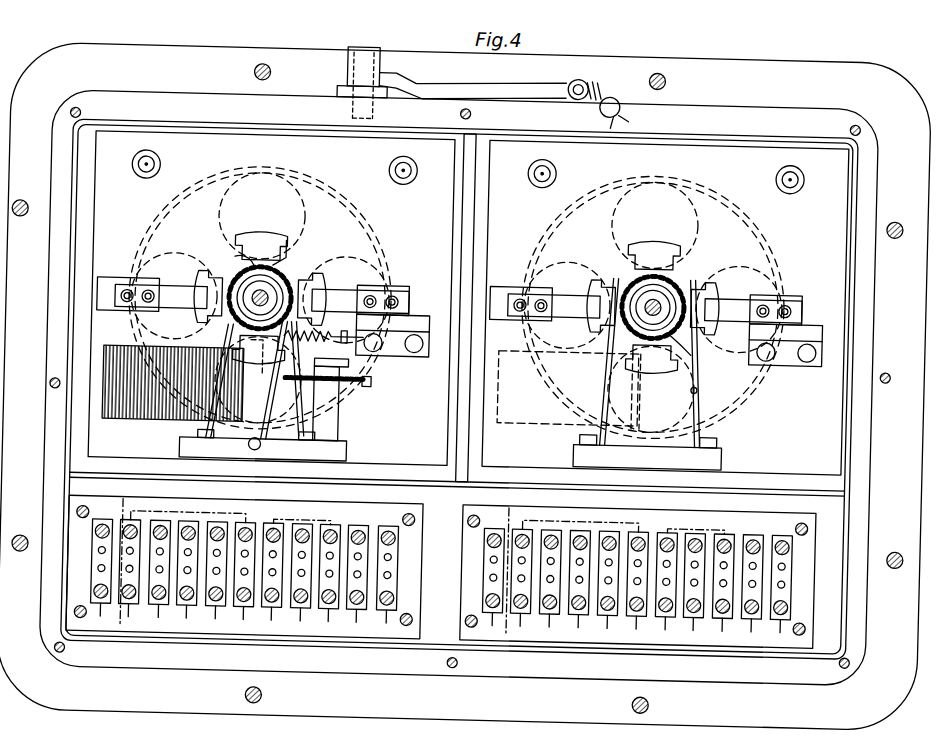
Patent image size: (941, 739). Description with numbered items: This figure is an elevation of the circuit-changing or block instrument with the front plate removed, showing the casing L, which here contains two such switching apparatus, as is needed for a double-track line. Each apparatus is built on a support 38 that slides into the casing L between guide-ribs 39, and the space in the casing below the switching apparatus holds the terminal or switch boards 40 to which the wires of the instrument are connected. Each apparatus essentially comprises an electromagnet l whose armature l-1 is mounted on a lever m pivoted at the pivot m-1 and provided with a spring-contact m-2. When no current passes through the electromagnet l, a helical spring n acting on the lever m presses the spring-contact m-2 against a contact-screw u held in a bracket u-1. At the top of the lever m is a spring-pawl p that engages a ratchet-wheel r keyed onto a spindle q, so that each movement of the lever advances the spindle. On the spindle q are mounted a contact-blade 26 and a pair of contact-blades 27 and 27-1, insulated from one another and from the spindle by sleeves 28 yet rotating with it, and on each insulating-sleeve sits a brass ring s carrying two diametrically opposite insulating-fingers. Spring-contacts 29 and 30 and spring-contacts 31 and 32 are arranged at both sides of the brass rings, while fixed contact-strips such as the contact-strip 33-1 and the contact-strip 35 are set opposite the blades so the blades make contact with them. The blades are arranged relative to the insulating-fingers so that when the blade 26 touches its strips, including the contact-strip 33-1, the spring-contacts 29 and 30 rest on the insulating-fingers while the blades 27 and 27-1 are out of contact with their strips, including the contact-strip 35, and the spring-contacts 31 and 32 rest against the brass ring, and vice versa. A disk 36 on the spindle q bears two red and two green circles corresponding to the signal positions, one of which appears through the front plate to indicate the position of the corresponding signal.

The casing L is at (48, 186).
The support 38 is at (52, 256).
The guide-ribs 39 is at (60, 488).
The terminal or switch boards 40 is at (468, 578).
The disk 36 is at (322, 185).
The insulating-sleeves 28 is at (660, 298).
The contact-blade 26 is at (318, 290).
The contact-blade 27 is at (238, 243).
The contact-blade 27-1 is at (712, 282).
The contact-strip 33-1 is at (175, 312).
The contact-strip 35 is at (567, 325).
The electromagnet l is at (160, 426).
The armature l-1 is at (776, 382).
The lever m is at (300, 268).
The pivot m-1 is at (258, 456).
The spring-contact m-2 is at (305, 400).
The contact-screw u is at (372, 385).
The bracket u-1 is at (345, 433).
The helical spring n is at (324, 344).
The spring-pawl p is at (283, 244).
The ratchet-wheel r is at (232, 262).
The spindle q is at (232, 288).
The spring-contact 29 is at (628, 345).
The spring-contact 31 is at (618, 343).
The spring-contact 30 is at (695, 355).
The spring-contact 32 is at (696, 388).
The brass ring s is at (690, 340).